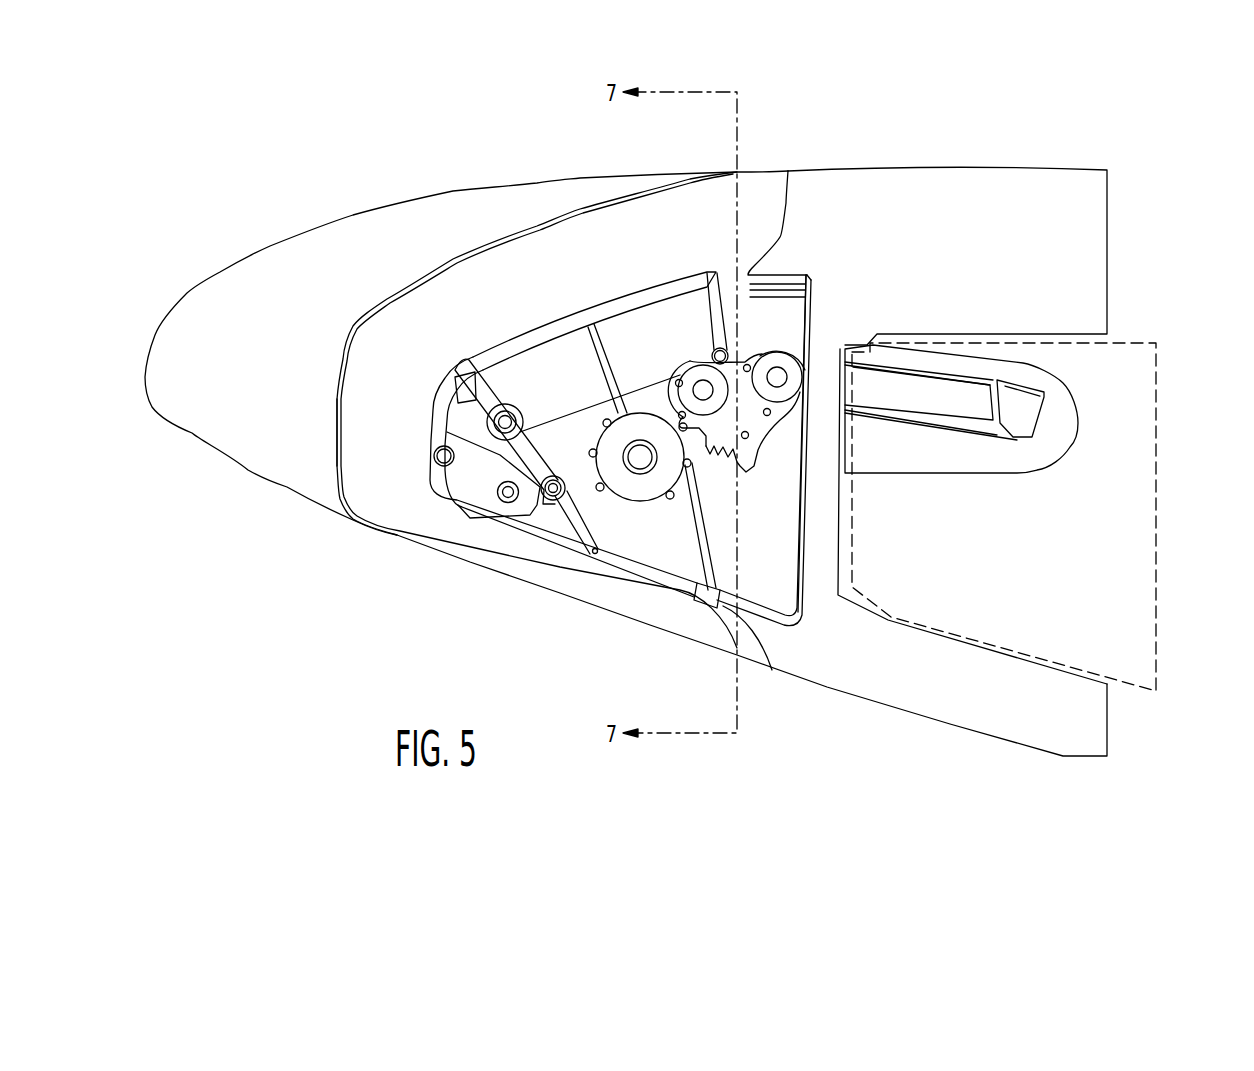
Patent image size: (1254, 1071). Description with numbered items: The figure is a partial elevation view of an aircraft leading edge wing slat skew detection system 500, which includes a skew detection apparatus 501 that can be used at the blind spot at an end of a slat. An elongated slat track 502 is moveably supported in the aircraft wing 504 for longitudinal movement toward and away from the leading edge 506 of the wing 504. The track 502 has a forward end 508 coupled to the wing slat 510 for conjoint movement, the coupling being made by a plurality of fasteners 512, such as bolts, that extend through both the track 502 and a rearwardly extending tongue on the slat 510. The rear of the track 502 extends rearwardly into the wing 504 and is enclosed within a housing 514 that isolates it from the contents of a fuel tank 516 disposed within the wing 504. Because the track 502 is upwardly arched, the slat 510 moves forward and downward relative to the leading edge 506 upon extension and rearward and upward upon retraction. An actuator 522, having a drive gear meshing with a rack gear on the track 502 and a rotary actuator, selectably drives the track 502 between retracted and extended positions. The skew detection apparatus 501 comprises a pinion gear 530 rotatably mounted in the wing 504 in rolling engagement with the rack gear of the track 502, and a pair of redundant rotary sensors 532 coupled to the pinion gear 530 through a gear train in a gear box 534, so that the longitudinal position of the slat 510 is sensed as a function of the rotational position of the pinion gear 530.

The aircraft leading edge wing slat skew detection system 500 is at (260, 177).
The skew detection apparatus 501 is at (748, 484).
The slat track 502 is at (1030, 365).
The aircraft wing 504 is at (823, 168).
The leading edge 506 is at (333, 447).
The forward end 508 is at (518, 510).
The wing slat 510 is at (188, 292).
The fasteners 512 is at (500, 500).
The housing 514 is at (510, 343).
The fuel tank 516 is at (1157, 561).
The actuator 522 is at (643, 500).
The pinion gear 530 is at (703, 473).
The rotary sensor 532 is at (700, 386).
The gear box 534 is at (753, 448).